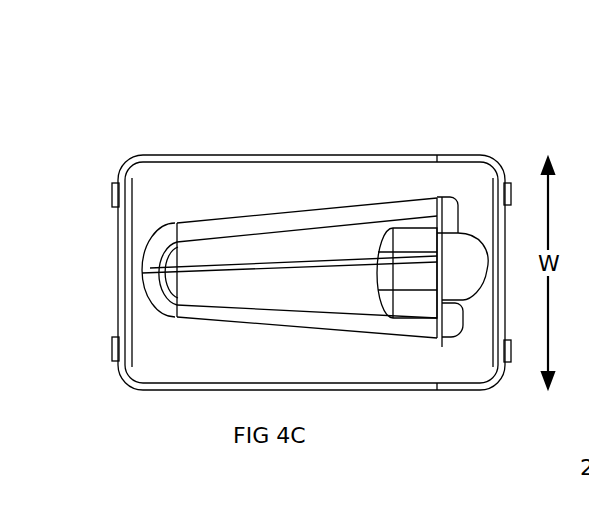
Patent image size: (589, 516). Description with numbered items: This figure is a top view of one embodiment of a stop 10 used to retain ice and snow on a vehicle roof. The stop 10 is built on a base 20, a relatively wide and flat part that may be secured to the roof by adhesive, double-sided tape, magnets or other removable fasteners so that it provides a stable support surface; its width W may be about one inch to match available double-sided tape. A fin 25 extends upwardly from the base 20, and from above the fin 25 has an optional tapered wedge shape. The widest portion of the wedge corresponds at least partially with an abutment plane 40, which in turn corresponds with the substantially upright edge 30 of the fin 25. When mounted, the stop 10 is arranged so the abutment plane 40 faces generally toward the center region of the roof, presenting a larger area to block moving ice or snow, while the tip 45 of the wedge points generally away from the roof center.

The stop 10 is at (430, 142).
The base 20 is at (177, 350).
The fin 25 is at (282, 283).
The upright edge 30 is at (460, 337).
The abutment plane 40 is at (437, 263).
The tip 45 is at (143, 268).